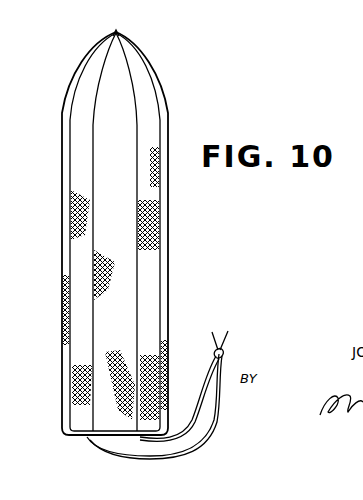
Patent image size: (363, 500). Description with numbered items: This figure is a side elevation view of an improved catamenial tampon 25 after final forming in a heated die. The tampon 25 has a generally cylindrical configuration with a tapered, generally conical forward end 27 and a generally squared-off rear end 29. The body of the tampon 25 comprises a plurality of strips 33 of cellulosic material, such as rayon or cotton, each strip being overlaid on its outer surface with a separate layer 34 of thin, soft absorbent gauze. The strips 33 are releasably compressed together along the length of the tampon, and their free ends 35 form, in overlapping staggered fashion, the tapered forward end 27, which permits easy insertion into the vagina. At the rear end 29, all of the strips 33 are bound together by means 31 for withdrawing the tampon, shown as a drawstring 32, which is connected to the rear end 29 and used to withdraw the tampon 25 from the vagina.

The catamenial tampon 25 is at (130, 215).
The forward end 27 is at (146, 62).
The rear end 29 is at (85, 438).
The means for withdrawing the tampon 31 is at (190, 377).
The drawstring 32 is at (212, 353).
The strips 33 is at (148, 128).
The layer of absorbent gauze 34 is at (66, 272).
The free ends 35 is at (117, 23).